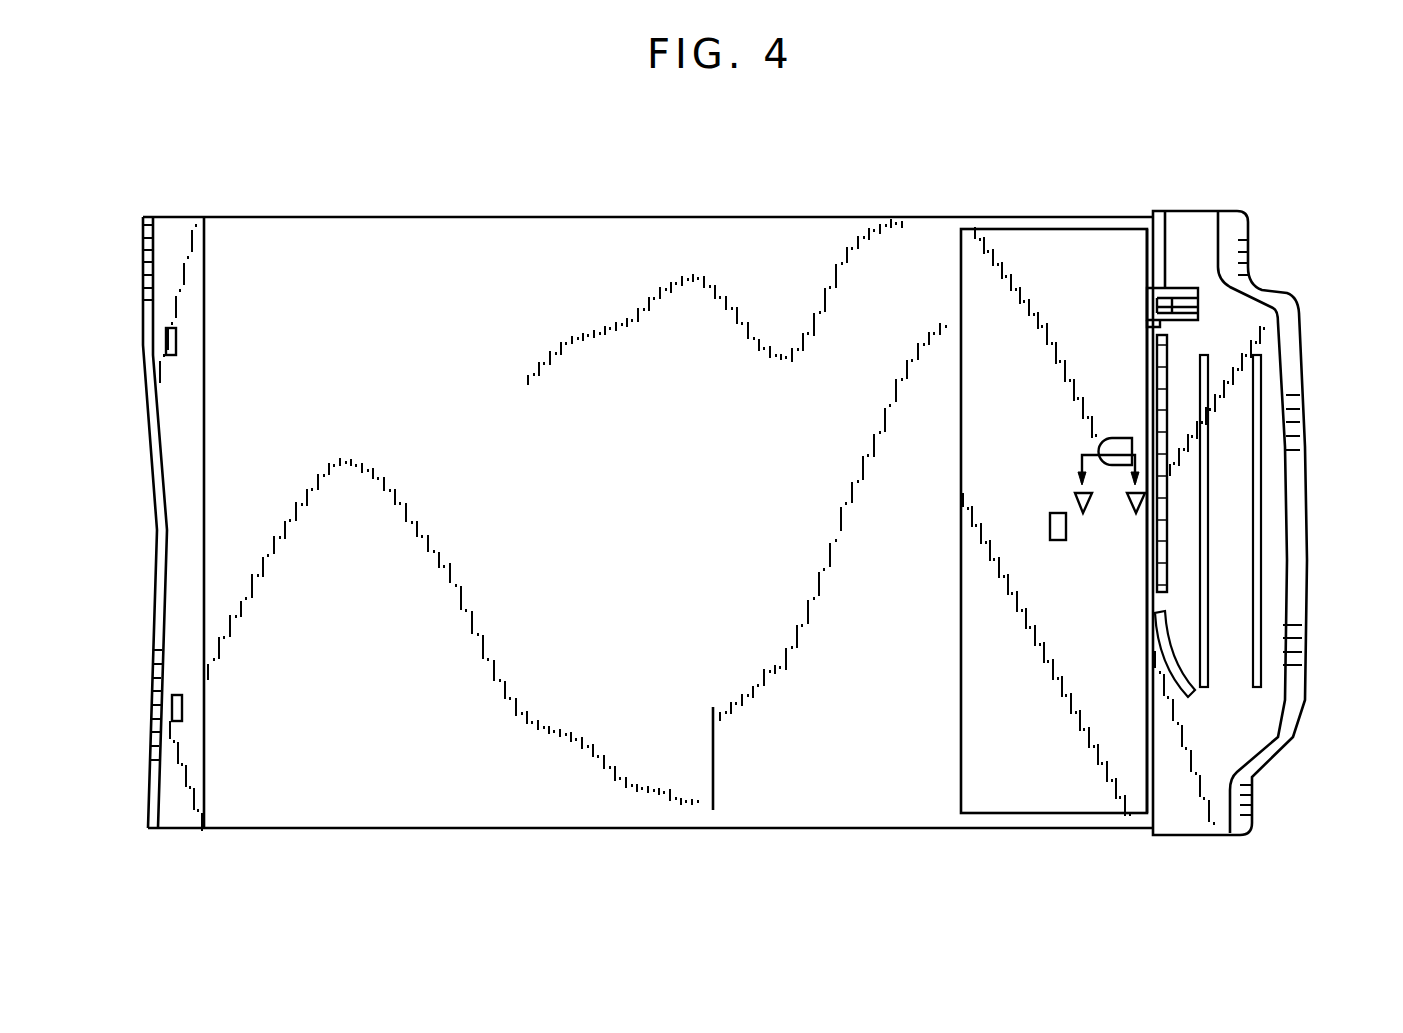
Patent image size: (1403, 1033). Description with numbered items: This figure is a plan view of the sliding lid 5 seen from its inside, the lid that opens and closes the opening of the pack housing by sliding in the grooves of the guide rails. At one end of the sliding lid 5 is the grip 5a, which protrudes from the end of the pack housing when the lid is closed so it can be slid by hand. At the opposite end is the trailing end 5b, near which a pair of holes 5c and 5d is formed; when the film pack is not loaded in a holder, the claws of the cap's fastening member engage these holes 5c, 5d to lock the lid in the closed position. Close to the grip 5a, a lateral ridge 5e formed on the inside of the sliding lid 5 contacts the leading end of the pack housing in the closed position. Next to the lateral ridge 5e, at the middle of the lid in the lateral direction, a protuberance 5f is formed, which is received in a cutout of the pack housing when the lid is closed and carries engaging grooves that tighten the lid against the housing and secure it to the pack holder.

The sliding lid 5 is at (711, 217).
The grip 5a is at (1307, 490).
The trailing end 5b is at (188, 502).
The hole 5c is at (176, 341).
The hole 5d is at (182, 707).
The lateral ridge 5e is at (1160, 570).
The protuberance 5f is at (1113, 437).